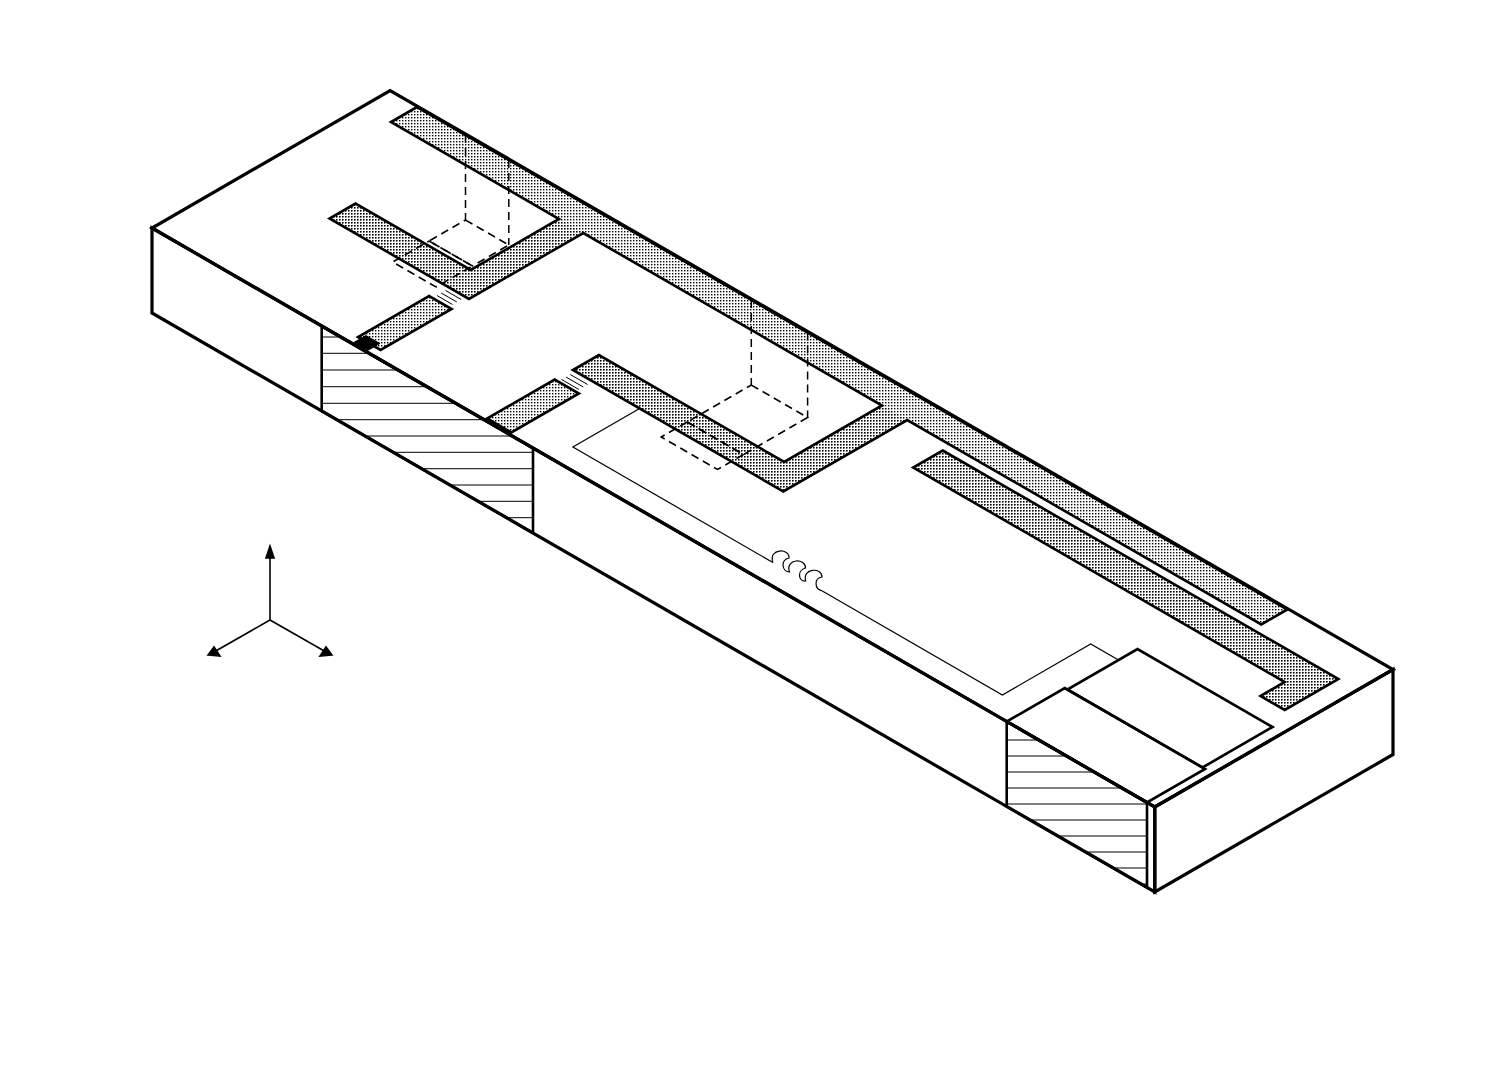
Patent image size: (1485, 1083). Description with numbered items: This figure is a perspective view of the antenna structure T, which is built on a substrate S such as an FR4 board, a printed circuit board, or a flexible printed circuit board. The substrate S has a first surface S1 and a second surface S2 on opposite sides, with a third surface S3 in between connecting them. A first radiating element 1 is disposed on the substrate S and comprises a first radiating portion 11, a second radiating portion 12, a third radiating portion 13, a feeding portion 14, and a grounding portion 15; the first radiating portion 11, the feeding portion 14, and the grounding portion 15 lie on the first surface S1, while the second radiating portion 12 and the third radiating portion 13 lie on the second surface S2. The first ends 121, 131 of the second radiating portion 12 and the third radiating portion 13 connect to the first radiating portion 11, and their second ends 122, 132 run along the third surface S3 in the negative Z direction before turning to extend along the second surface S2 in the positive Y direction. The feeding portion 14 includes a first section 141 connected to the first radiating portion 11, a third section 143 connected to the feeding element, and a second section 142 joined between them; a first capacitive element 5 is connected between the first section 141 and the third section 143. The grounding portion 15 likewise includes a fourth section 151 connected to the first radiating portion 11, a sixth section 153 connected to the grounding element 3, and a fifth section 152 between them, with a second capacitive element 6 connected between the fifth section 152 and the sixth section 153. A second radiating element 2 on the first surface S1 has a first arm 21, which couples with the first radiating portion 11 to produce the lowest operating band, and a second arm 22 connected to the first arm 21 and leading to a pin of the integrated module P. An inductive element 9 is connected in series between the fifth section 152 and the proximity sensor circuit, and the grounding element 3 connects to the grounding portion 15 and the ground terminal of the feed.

The antenna structure T is at (213, 93).
The substrate S is at (167, 270).
The first surface S1 is at (205, 208).
The second surface S2 is at (226, 356).
The third surface S3 is at (1405, 701).
The grounding element 3 is at (382, 443).
The integrated module P is at (1208, 687).
The first radiating element 1 is at (1444, 80).
The first radiating portion 11 is at (683, 268).
The second radiating portion 12 is at (448, 235).
The first end of the second radiating portion 121 is at (507, 168).
The second end of the second radiating portion 122 is at (405, 283).
The third radiating portion 13 is at (722, 400).
The first end of the third radiating portion 131 is at (832, 336).
The second end of the third radiating portion 132 is at (700, 447).
The feeding portion 14 is at (1345, 118).
The first section 141 is at (553, 243).
The second section 142 is at (350, 205).
The third section 143 is at (400, 320).
The grounding portion 15 is at (1235, 118).
The fourth section 151 is at (830, 457).
The fifth section 152 is at (757, 470).
The sixth section 153 is at (527, 400).
The first capacitive element 5 is at (479, 301).
The second capacitive element 6 is at (568, 366).
The second radiating element 2 is at (1135, 118).
The first arm 21 is at (1038, 540).
The second arm 22 is at (1290, 703).
The inductive element 9 is at (837, 576).